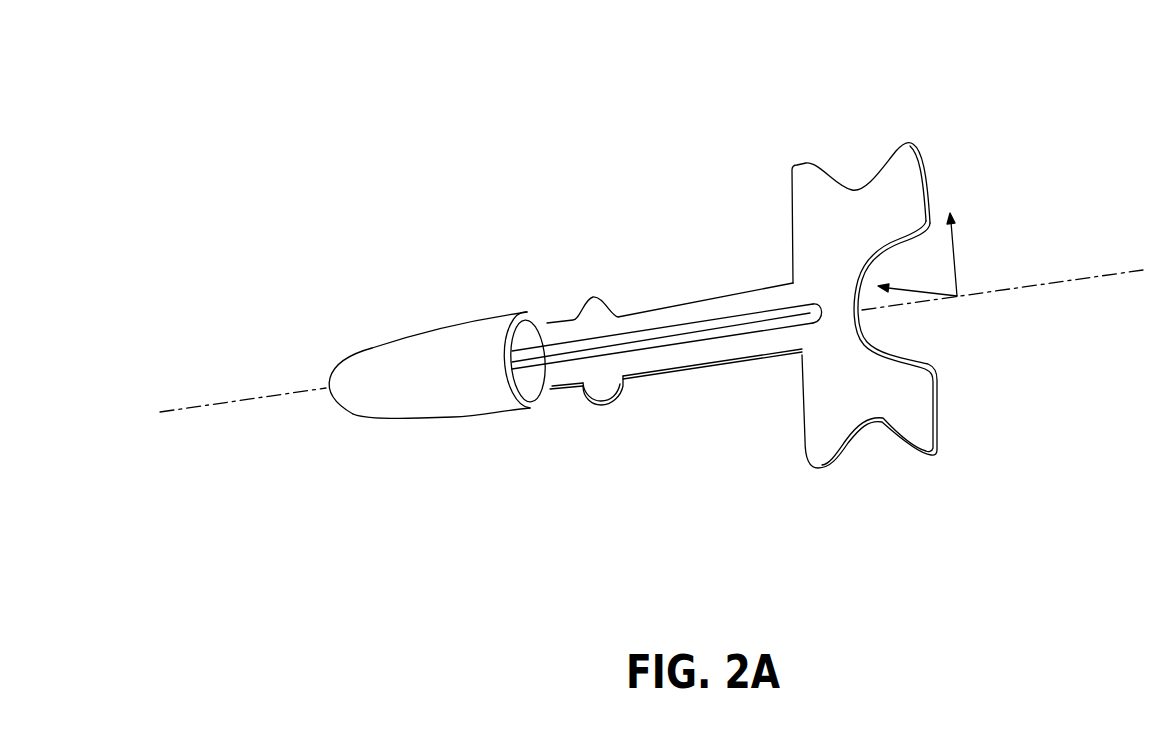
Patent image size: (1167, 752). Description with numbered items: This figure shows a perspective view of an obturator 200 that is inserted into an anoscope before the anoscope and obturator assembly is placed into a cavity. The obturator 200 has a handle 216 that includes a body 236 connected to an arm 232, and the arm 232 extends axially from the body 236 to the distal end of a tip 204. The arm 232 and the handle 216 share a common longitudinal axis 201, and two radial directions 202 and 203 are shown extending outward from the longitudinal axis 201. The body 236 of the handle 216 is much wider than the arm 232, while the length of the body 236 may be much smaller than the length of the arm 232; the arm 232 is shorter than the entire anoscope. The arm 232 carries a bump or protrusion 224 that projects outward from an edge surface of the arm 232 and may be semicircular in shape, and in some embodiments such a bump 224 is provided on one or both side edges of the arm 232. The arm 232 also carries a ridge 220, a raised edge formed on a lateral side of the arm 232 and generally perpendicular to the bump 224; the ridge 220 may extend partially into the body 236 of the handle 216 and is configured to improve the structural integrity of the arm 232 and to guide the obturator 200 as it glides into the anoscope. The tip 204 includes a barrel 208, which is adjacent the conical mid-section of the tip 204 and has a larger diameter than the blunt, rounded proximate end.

The obturator 200 is at (279, 125).
The longitudinal axis 201 is at (1080, 280).
The radial direction 202 is at (902, 289).
The radial direction 203 is at (953, 243).
The tip 204 is at (349, 420).
The barrel 208 is at (452, 322).
The handle 216 is at (940, 378).
The ridge 220 is at (684, 330).
The bump or protrusion 224 is at (606, 406).
The arm 232 is at (647, 320).
The body 236 is at (799, 164).